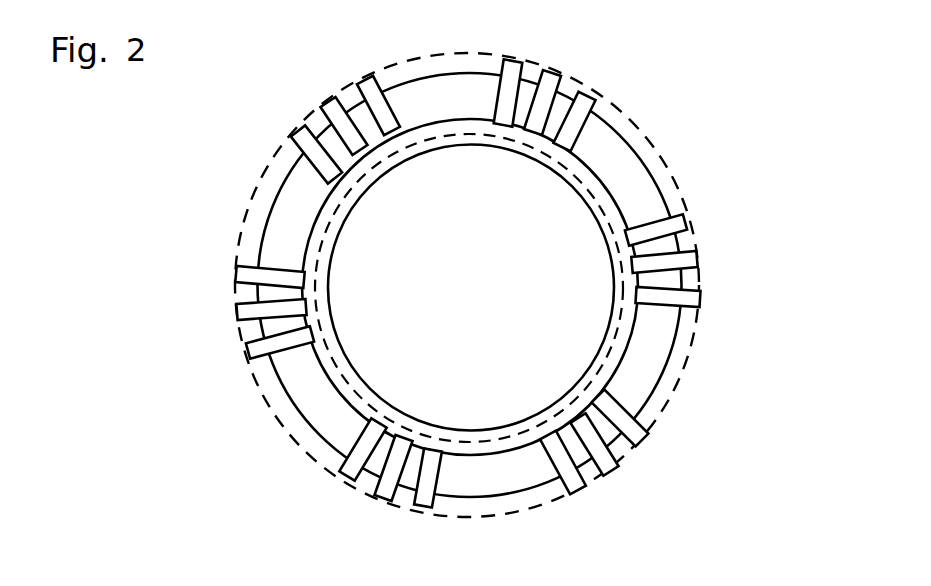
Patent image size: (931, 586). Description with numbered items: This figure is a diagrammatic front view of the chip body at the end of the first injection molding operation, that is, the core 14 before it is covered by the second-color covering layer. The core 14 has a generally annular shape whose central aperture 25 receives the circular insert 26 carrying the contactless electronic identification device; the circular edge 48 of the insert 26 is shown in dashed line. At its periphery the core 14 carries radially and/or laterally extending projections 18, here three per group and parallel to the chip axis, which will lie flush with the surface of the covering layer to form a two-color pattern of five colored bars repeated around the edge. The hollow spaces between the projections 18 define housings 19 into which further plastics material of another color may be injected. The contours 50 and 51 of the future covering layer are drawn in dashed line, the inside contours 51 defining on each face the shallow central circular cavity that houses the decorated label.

The core 14 is at (458, 286).
The projections 18 is at (421, 508).
The housings 19 is at (628, 460).
The central aperture 25 is at (362, 374).
The insert 26 is at (543, 262).
The circular edge 48 is at (603, 363).
The contour 50 is at (262, 187).
The inside contours 51 is at (333, 191).